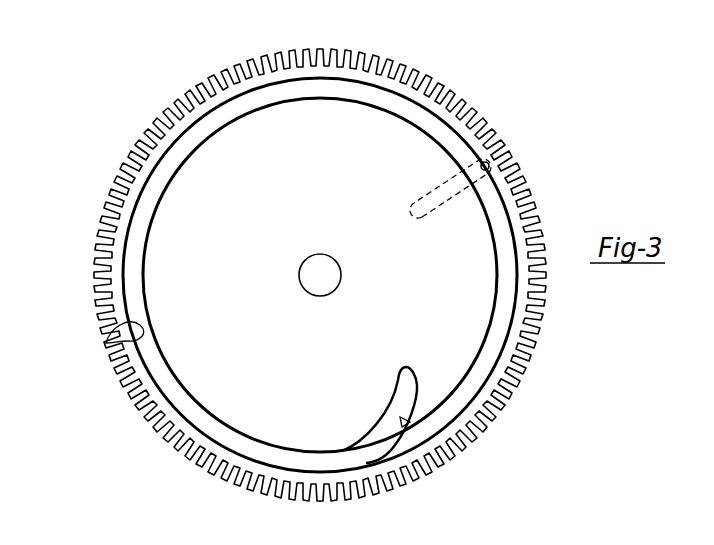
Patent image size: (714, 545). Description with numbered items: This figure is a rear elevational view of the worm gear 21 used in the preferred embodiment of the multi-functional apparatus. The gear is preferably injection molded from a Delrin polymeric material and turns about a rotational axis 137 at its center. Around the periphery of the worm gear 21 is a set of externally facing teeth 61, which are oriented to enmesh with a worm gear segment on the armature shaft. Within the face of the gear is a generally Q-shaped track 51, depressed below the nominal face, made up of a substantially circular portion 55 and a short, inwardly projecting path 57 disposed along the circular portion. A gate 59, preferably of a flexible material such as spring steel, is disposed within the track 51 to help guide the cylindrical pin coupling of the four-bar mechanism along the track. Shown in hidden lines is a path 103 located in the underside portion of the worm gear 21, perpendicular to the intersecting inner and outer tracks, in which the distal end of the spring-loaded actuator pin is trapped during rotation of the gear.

The worm gear 21 is at (515, 178).
The Q-shaped track 51 is at (106, 343).
The circular portion 55 is at (152, 398).
The inwardly projecting path 57 is at (405, 430).
The gate 59 is at (405, 433).
The externally facing teeth 61 is at (395, 67).
The path 103 is at (482, 146).
The rotational axis 137 is at (328, 273).